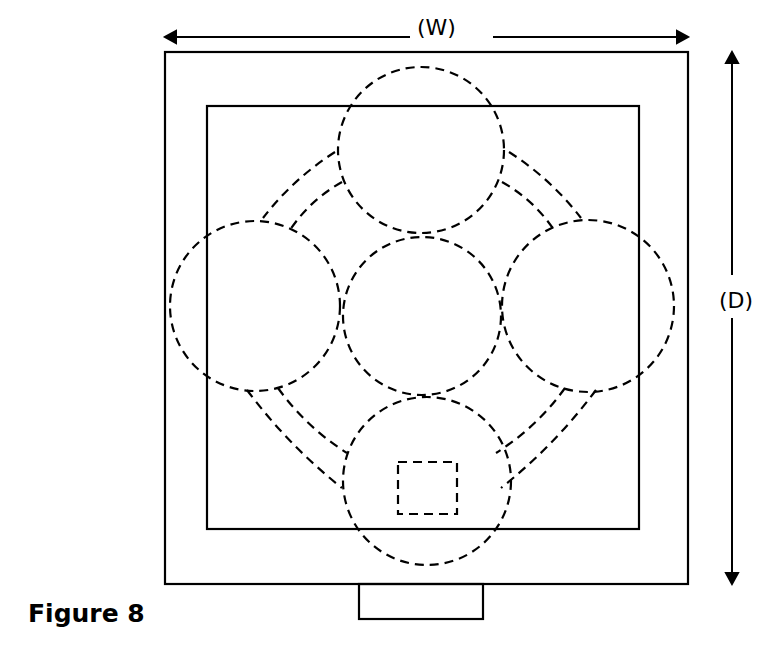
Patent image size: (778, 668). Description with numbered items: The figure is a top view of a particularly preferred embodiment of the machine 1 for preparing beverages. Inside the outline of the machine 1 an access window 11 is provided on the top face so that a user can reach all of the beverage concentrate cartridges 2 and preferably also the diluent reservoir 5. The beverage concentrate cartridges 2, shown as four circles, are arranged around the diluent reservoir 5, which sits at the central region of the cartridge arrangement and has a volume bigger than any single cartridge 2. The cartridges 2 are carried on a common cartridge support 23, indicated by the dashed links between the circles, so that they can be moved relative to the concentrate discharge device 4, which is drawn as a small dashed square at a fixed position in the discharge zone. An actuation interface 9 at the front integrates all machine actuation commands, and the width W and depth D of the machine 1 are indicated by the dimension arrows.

The machine for preparing beverages 1 is at (371, 303).
The beverage concentrate cartridges 2 is at (425, 319).
The concentrate discharge device 4 is at (427, 476).
The diluent reservoir 5 is at (422, 316).
The actuation interface 9 is at (440, 603).
The access window 11 is at (425, 306).
The cartridge support 23 is at (421, 320).